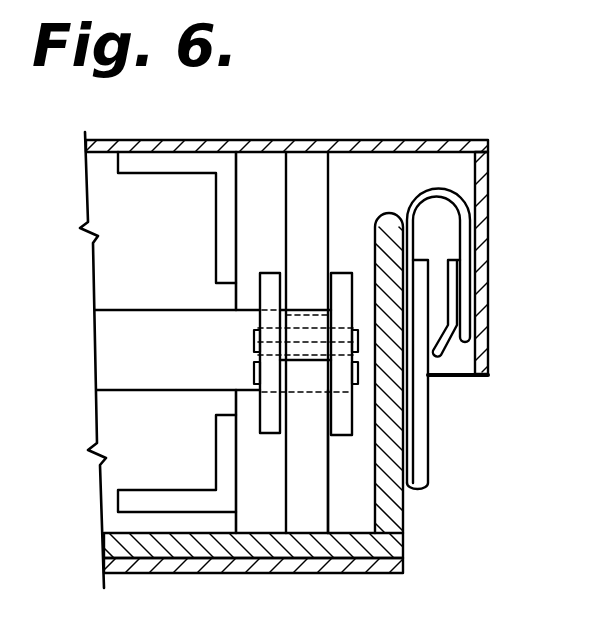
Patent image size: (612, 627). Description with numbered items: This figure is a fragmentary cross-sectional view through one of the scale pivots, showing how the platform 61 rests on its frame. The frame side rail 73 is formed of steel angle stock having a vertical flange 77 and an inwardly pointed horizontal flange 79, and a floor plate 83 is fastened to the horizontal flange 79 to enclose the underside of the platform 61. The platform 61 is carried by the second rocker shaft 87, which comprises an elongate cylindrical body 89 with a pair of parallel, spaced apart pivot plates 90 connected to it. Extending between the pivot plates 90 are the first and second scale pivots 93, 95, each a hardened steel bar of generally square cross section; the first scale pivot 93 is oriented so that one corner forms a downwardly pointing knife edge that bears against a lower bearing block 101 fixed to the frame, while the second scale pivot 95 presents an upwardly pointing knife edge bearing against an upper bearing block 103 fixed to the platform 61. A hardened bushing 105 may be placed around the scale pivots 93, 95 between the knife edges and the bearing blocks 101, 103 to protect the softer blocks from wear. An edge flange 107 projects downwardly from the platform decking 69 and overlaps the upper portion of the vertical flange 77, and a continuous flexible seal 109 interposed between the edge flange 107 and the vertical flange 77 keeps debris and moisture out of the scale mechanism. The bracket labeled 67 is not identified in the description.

The platform 61 is at (485, 251).
The upper bracket 67 is at (148, 178).
The platform decking 69 is at (223, 139).
The side rail 73 is at (282, 359).
The vertical flange 77 is at (378, 214).
The horizontal flange 79 is at (243, 531).
The floor plate 83 is at (237, 575).
The second rocker shaft 87 is at (100, 308).
The cylindrical body 89 is at (150, 309).
The pivot plate 90 is at (268, 273).
The first scale pivot 93 is at (255, 340).
The second scale pivot 95 is at (255, 373).
The lower bearing block 101 is at (328, 513).
The upper bearing block 103 is at (285, 173).
The hardened bushing 105 is at (304, 308).
The edge flange 107 is at (490, 284).
The flexible seal 109 is at (438, 190).